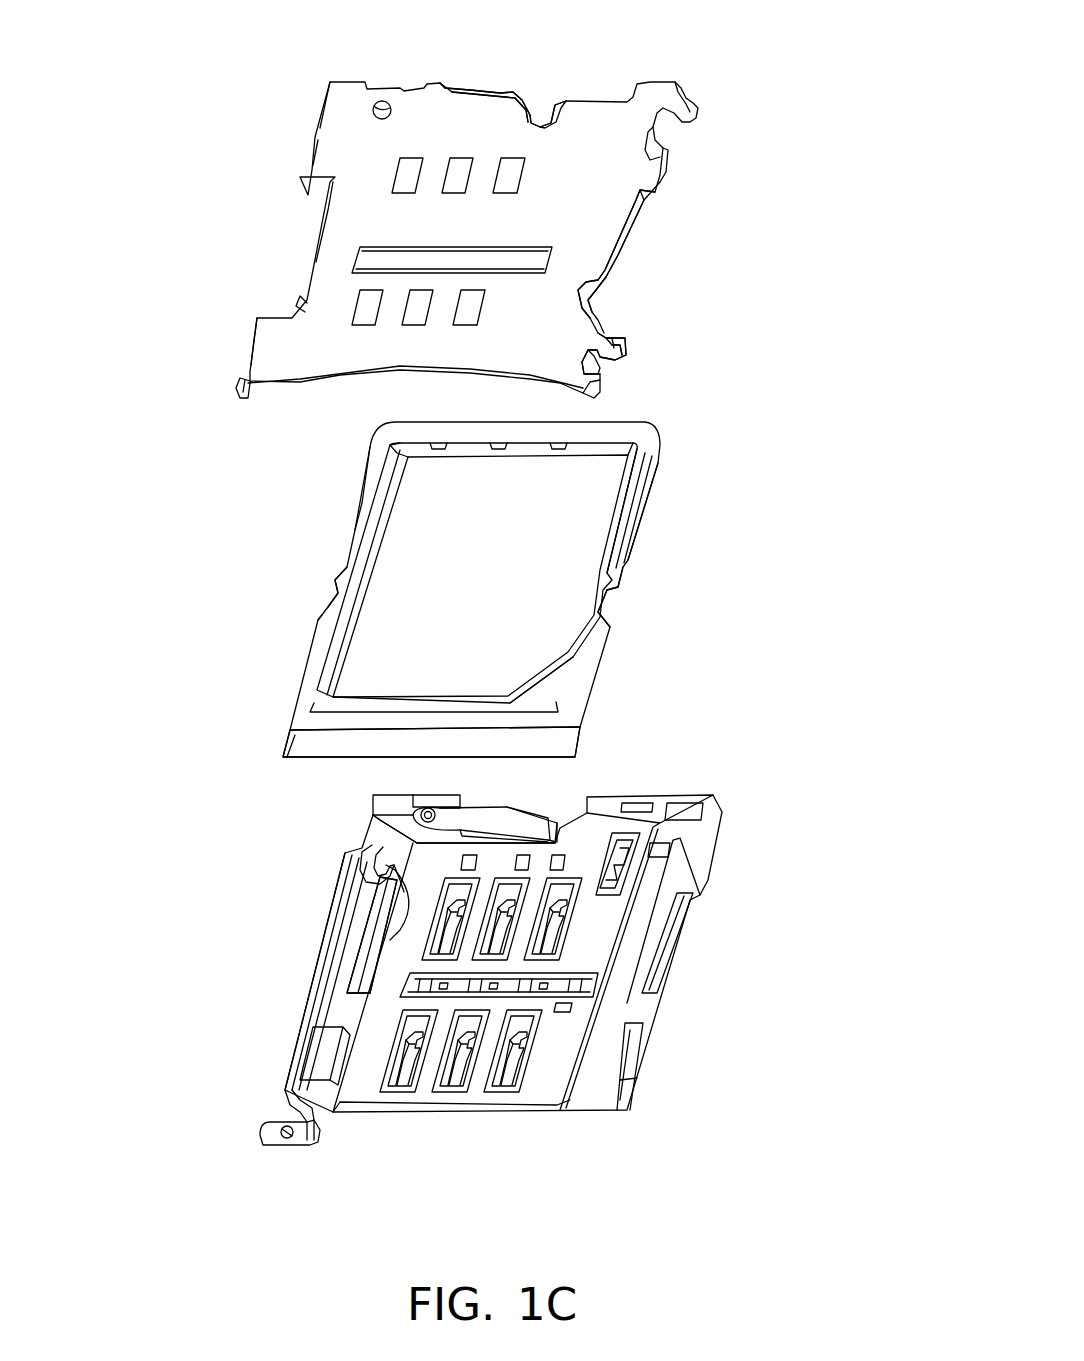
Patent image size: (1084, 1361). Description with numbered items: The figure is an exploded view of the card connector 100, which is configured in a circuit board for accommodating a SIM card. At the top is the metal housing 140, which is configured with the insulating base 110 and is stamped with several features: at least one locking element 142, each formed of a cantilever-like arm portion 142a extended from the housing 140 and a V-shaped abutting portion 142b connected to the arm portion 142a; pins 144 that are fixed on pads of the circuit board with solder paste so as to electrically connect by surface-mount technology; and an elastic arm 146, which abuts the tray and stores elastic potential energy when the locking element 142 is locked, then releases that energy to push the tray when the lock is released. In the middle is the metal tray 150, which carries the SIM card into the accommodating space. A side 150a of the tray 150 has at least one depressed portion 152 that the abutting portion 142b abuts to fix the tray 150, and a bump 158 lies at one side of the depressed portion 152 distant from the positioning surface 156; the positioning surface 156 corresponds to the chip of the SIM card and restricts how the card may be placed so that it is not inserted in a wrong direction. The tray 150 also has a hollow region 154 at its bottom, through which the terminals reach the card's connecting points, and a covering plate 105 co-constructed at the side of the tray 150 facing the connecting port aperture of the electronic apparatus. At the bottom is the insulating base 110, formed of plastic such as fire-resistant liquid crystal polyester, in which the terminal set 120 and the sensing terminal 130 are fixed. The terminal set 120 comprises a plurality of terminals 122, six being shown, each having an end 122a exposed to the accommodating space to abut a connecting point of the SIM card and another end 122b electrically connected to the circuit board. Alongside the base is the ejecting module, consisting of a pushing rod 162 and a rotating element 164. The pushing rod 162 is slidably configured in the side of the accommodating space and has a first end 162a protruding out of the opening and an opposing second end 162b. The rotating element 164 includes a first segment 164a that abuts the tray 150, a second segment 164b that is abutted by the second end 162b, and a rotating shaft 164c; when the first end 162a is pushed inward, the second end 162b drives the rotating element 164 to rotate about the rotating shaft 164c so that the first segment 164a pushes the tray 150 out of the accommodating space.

The card connector 100 is at (736, 36).
The covering plate 105 is at (580, 750).
The insulating base 110 is at (620, 1113).
The terminal set 120 is at (532, 1175).
The terminal 122 is at (403, 1083).
The end of the terminal 122a is at (560, 900).
The other end of the terminal 122b is at (530, 990).
The sensing terminal 130 is at (617, 873).
The housing 140 is at (596, 120).
The locking element 142 is at (779, 212).
The arm portion 142a is at (615, 245).
The abutting portion 142b is at (612, 296).
The pin 144 is at (625, 350).
The elastic arm 146 is at (503, 93).
The tray 150 is at (570, 687).
The side of the tray 150a is at (630, 538).
The depressed portion 152 is at (607, 605).
The hollow region 154 is at (592, 503).
The positioning surface 156 is at (528, 676).
The bump 158 is at (615, 580).
The pushing rod 162 is at (283, 1103).
The first end 162a is at (267, 1133).
The second end 162b is at (417, 890).
The rotating element 164 is at (242, 783).
The first segment 164a is at (487, 817).
The second segment 164b is at (380, 842).
The rotating shaft 164c is at (420, 817).